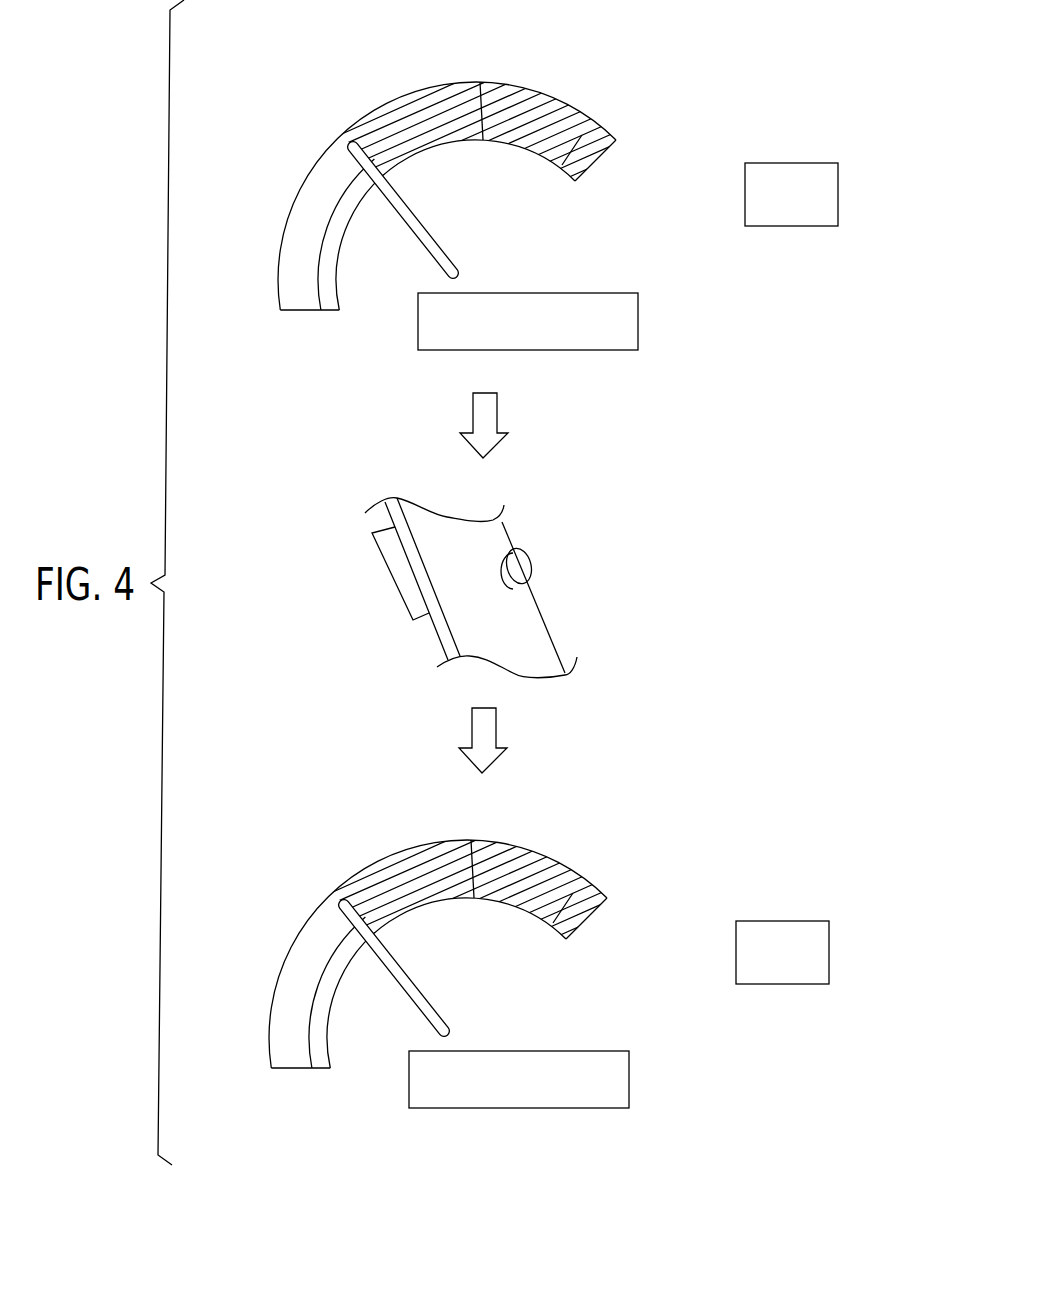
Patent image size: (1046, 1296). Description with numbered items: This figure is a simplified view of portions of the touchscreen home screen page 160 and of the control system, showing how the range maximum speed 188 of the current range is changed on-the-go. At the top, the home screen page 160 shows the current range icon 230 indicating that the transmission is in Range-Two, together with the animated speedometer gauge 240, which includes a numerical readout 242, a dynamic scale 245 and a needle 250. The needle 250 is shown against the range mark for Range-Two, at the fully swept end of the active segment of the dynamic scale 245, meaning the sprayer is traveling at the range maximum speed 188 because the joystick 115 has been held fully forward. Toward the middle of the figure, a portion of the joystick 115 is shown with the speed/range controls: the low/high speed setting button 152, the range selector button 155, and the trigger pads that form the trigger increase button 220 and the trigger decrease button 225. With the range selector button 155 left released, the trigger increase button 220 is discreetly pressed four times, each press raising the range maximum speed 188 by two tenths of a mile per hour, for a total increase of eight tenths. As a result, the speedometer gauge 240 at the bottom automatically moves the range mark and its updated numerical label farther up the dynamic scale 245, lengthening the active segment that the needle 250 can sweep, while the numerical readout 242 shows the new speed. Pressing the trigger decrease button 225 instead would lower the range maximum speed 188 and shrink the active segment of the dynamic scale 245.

The joystick 115 is at (637, 607).
The low/high speed setting button 152 is at (367, 590).
The range selector button 155 is at (540, 560).
The home screen page 160 is at (272, 178).
The range maximum speed 188 is at (315, 100).
The trigger increase button 220 is at (373, 545).
The trigger decrease button 225 is at (405, 600).
The current range icon 230 is at (790, 228).
The speedometer gauge 240 is at (506, 560).
The numerical readout 242 is at (638, 318).
The dynamic scale 245 is at (622, 140).
The needle 250 is at (398, 222).